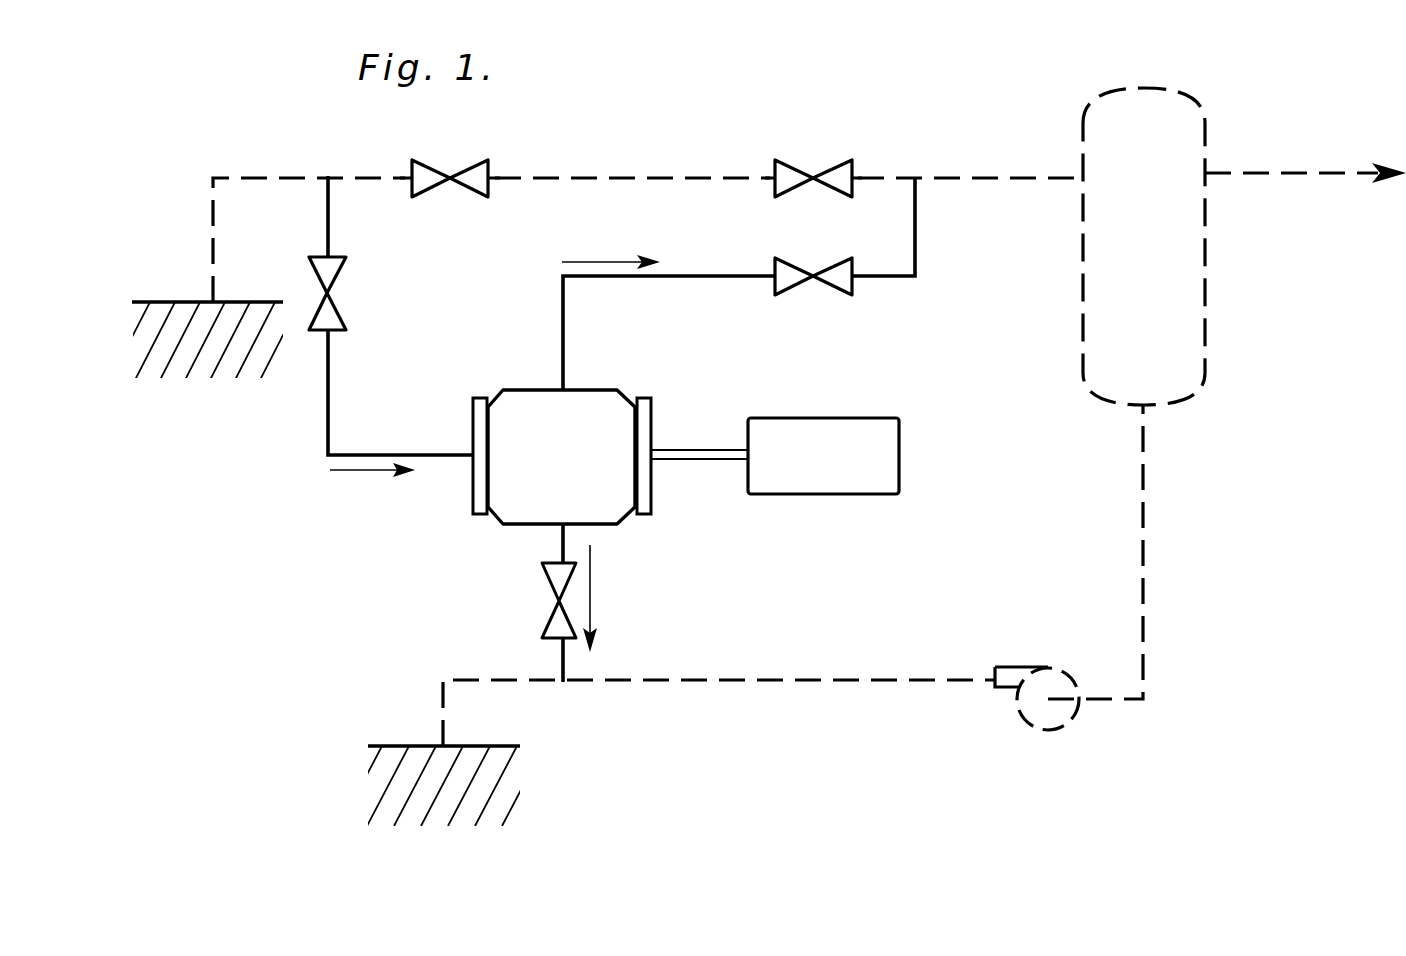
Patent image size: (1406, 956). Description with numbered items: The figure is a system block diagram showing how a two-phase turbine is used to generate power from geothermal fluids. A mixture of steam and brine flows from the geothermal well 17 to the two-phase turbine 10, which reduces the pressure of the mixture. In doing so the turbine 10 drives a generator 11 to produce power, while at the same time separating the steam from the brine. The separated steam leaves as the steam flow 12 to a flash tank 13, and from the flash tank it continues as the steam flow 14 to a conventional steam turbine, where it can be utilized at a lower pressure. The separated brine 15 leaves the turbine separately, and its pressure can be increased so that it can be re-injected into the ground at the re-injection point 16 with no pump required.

The two-phase turbine 10 is at (562, 457).
The generator 11 is at (775, 456).
The steam flow 12 is at (562, 322).
The flash tank 13 is at (1083, 140).
The steam flow 14 is at (1355, 172).
The separated brine 15 is at (560, 542).
The re-injection point 16 is at (441, 740).
The geothermal well 17 is at (200, 368).